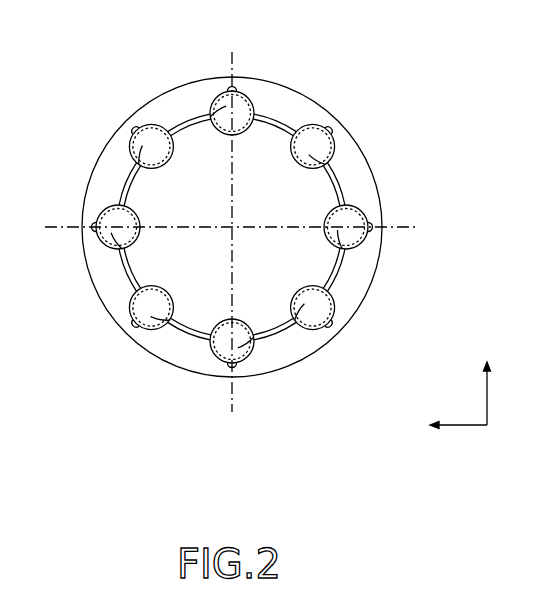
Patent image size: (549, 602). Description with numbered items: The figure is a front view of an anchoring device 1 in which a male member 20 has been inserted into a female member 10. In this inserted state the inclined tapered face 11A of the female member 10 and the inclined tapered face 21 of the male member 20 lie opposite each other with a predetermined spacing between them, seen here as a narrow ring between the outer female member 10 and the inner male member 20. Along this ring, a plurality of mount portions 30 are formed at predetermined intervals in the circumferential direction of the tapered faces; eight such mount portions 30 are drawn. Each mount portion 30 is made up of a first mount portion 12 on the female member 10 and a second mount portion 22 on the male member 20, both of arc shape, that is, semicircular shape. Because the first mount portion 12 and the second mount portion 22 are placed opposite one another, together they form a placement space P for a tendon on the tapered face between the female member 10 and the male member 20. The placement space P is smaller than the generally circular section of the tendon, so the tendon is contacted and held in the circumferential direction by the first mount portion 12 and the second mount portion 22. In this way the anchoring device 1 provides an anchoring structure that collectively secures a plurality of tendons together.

The anchoring device 1 is at (340, 63).
The female member 10 is at (338, 103).
The inclined tapered face 11A is at (346, 202).
The male member 20 is at (280, 113).
The inclined tapered face 21 is at (352, 190).
The mount portion 30 is at (182, 35).
The first mount portion 12 is at (231, 95).
The second mount portion 22 is at (211, 115).
The placement space P is at (240, 115).